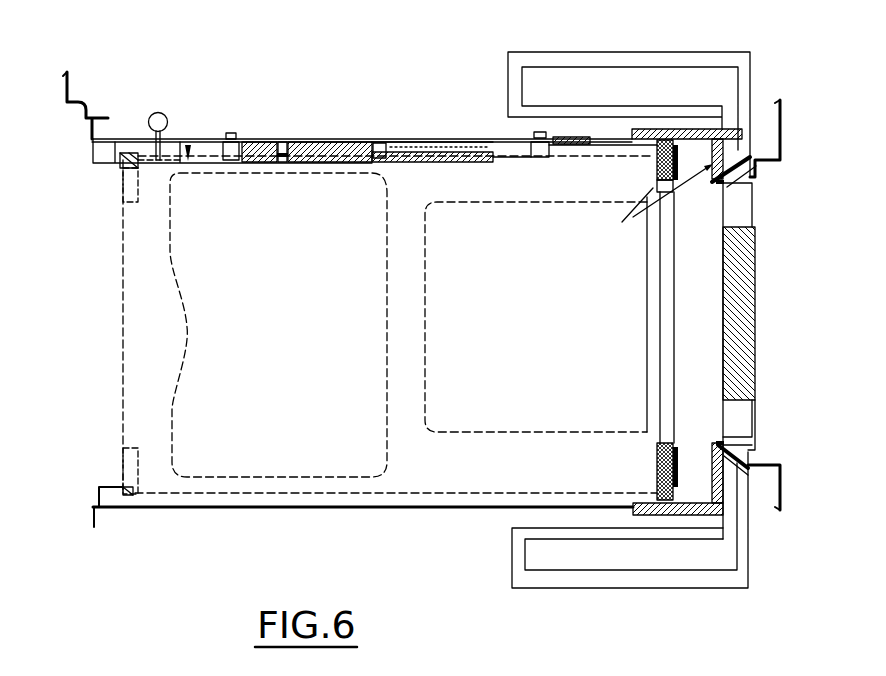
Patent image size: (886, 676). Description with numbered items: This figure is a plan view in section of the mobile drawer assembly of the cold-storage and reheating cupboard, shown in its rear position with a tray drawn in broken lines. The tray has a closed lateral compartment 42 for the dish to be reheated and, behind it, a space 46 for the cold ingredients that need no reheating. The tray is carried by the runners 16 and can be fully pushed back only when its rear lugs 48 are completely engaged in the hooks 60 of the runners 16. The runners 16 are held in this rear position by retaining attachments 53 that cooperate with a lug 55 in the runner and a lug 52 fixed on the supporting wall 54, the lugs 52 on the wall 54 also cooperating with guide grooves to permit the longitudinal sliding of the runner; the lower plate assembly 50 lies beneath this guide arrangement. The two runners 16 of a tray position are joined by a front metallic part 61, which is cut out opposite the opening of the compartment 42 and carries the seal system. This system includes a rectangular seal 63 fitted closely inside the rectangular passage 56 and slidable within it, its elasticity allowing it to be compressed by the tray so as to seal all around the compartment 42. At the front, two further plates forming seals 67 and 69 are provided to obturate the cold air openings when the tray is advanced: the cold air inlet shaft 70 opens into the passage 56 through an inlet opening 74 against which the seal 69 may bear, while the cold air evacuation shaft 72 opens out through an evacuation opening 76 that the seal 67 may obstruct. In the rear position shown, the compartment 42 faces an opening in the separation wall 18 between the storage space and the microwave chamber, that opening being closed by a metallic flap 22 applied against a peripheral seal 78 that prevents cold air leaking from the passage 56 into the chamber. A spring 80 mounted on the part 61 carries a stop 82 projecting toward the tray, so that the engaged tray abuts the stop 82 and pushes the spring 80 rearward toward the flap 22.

The runner 16 is at (307, 504).
The separation wall 18 is at (782, 168).
The mobile closure flap 22 is at (742, 328).
The lateral compartment 42 is at (519, 326).
The space for other ingredients 46 is at (266, 343).
The rear lug 48 is at (124, 165).
The lower plate assembly 50 is at (396, 142).
The lug 52 is at (233, 141).
The retaining attachment 53 is at (253, 141).
The supporting wall 54 is at (360, 132).
The runner lug 55 is at (289, 142).
The rectangular passage 56 is at (686, 350).
The hook 60 is at (137, 150).
The front metallic part 61 is at (662, 310).
The rectangular seal 63 is at (655, 172).
The seal plate 67 is at (688, 129).
The seal plate 69 is at (681, 467).
The cold air inlet shaft 70 is at (577, 562).
The cold air evacuation shaft 72 is at (594, 75).
The cold air inlet opening 74 is at (648, 415).
The cold air evacuation opening 76 is at (724, 175).
The seal 78 is at (719, 184).
The spring 80 is at (677, 190).
The stop 82 is at (653, 204).